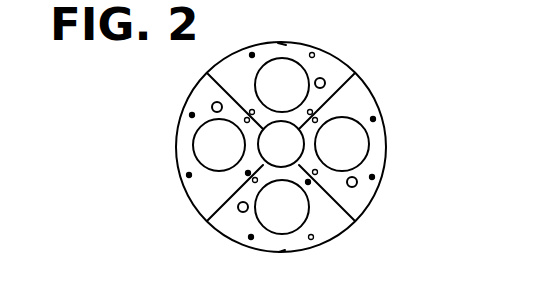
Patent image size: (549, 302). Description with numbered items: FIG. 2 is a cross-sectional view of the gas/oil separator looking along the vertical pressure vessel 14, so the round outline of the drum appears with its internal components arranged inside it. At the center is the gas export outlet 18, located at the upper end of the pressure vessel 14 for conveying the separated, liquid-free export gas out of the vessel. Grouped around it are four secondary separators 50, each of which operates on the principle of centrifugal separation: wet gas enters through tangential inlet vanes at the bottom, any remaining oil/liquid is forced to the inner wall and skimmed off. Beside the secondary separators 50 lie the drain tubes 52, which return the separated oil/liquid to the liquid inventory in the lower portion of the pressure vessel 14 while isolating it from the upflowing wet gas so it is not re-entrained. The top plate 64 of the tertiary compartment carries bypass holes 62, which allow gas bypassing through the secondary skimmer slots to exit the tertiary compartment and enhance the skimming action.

The pressure vessel 14 is at (382, 112).
The gas export outlet 18 is at (268, 150).
The secondary separator 50 is at (207, 142).
The drain tube 52 is at (214, 103).
The bypass holes 62 is at (313, 57).
The top plate 64 is at (283, 45).